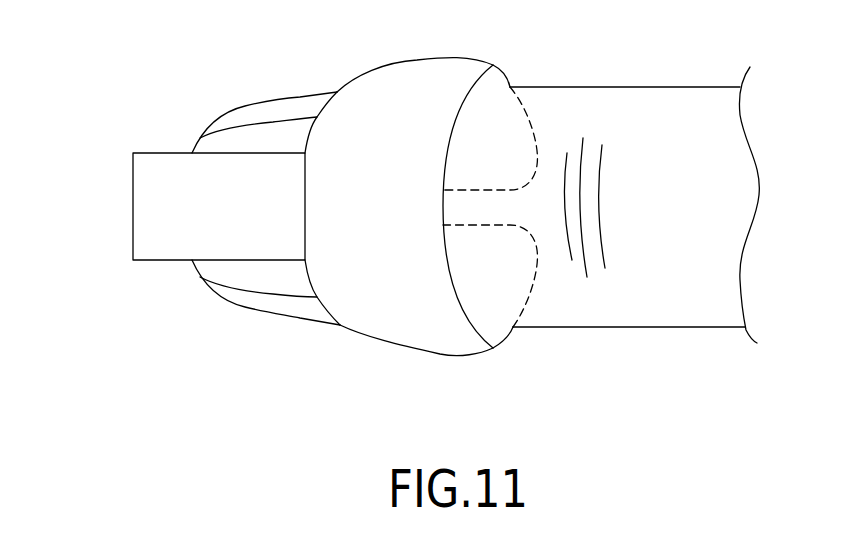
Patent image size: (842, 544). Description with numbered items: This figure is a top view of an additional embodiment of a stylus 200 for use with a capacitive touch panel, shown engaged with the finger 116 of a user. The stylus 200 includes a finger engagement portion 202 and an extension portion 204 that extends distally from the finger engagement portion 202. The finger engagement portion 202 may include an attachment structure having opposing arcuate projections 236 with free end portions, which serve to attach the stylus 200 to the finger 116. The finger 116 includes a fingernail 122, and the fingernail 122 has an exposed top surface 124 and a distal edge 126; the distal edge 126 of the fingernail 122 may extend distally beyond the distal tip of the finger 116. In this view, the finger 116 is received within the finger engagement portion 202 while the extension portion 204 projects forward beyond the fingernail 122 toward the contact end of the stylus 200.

The finger 116 is at (640, 313).
The fingernail 122 is at (240, 147).
The exposed top surface 124 is at (300, 148).
The distal edge 126 is at (192, 262).
The stylus 200 is at (339, 373).
The finger engagement portion 202 is at (523, 54).
The extension portion 204 is at (112, 131).
The opposing arcuate projections 236 is at (560, 292).